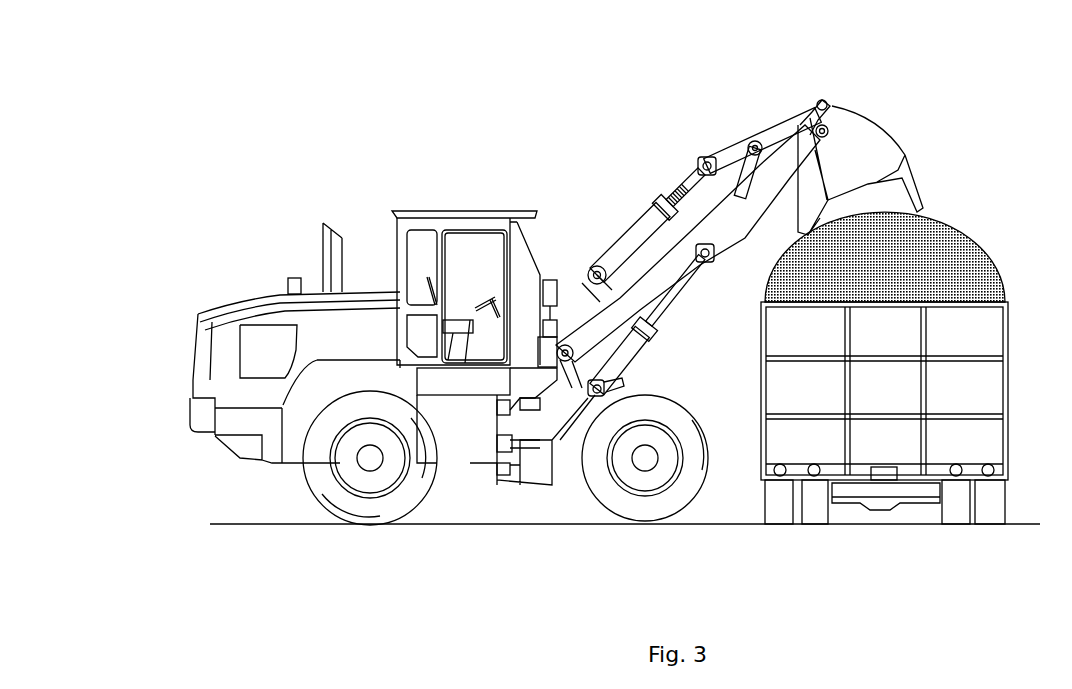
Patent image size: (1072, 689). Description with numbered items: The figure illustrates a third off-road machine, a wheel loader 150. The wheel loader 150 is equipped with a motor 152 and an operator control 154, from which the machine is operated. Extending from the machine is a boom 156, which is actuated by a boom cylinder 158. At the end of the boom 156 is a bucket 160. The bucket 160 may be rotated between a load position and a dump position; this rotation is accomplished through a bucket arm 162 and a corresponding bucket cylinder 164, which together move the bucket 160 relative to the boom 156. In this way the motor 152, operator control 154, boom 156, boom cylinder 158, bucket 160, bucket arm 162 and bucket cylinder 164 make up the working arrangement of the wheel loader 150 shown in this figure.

The wheel loader 150 is at (580, 55).
The motor 152 is at (275, 292).
The operator control 154 is at (482, 292).
The boom 156 is at (748, 235).
The boom cylinder 158 is at (628, 355).
The bucket 160 is at (867, 135).
The bucket arm 162 is at (765, 130).
The bucket cylinder 164 is at (653, 208).